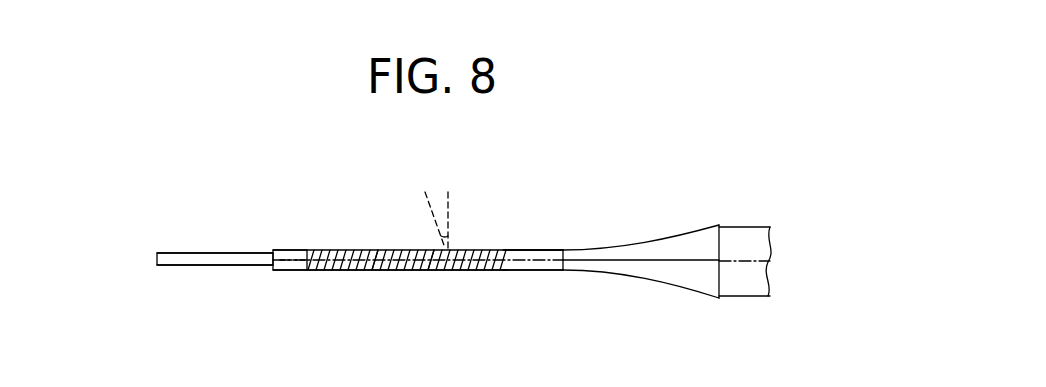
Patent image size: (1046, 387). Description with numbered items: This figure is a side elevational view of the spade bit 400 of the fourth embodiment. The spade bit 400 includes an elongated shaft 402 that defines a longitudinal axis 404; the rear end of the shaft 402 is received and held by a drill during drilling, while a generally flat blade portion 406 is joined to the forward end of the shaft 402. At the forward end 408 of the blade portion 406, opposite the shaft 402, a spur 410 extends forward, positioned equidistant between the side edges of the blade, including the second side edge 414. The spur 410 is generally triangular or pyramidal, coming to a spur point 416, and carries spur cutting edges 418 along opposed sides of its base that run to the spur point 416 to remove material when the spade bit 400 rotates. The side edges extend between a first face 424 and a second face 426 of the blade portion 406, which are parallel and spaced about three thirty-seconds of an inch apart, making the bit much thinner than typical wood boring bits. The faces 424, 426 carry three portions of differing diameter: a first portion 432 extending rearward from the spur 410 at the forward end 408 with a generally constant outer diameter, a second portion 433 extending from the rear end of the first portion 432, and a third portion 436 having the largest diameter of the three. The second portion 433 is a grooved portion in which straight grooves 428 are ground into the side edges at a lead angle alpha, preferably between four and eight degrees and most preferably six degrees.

The spade bit 400 is at (443, 254).
The elongated shaft 402 is at (741, 226).
The longitudinal axis 404 is at (733, 263).
The blade portion 406 is at (521, 254).
The forward end of the blade portion 408 is at (272, 252).
The spur 410 is at (218, 262).
The second side edge 414 is at (301, 270).
The spur point 416 is at (157, 259).
The spur cutting edges 418 is at (181, 253).
The first face 424 is at (373, 250).
The second face 426 is at (385, 271).
The grooves 428 is at (435, 271).
The first portion 432 is at (307, 242).
The second portion 433 is at (507, 319).
The third portion 436 is at (503, 213).
The lead angle alpha is at (445, 232).